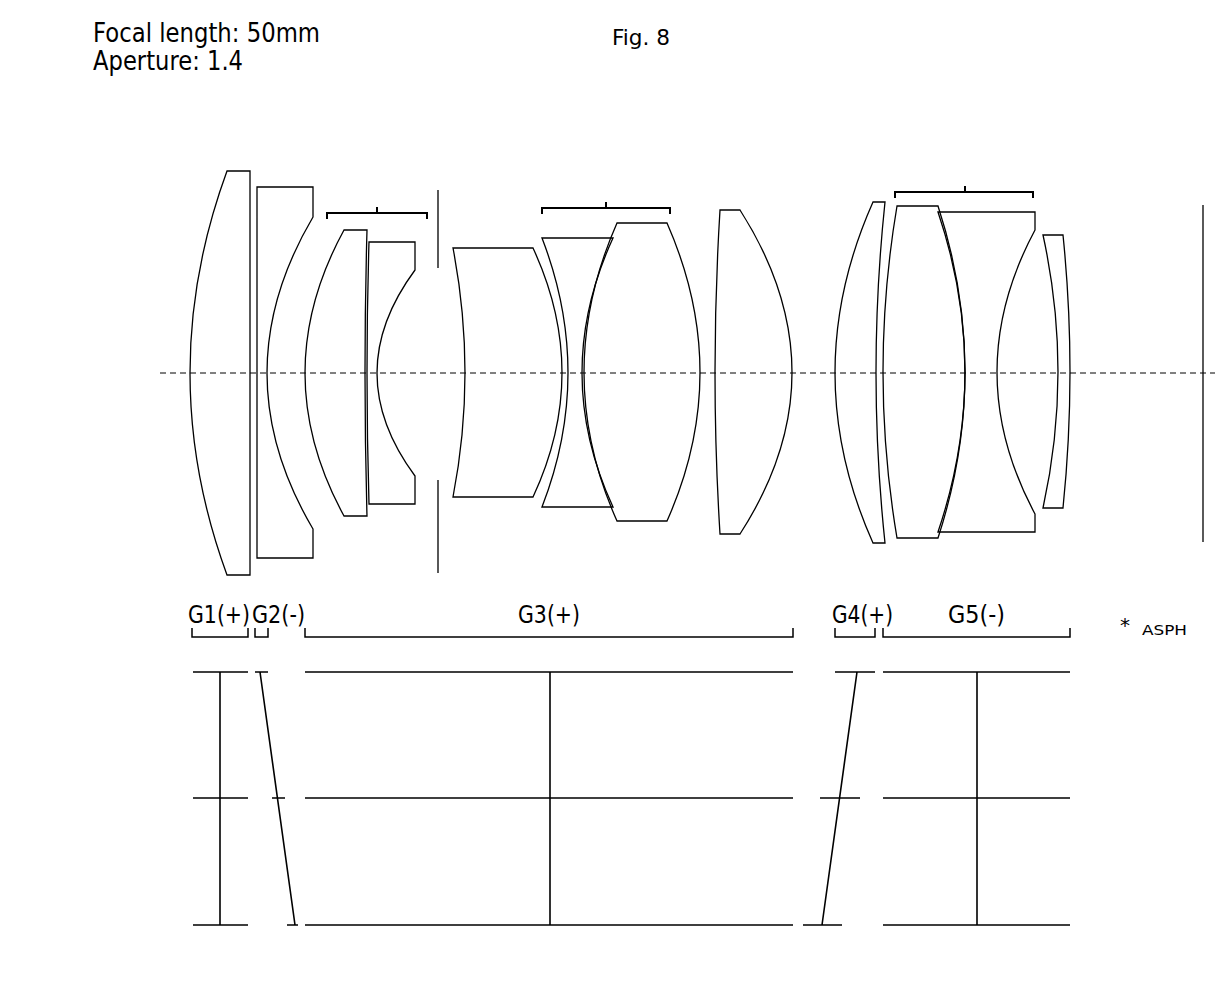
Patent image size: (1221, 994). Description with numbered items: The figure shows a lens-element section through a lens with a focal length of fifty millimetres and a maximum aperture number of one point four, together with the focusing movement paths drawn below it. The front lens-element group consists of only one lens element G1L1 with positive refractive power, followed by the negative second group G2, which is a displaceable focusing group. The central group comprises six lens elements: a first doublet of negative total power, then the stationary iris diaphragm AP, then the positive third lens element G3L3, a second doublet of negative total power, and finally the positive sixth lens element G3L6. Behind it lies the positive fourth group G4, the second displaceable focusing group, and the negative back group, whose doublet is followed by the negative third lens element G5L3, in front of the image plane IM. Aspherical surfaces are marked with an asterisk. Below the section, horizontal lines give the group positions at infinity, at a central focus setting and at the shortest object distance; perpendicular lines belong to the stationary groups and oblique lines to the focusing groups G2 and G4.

The first lens element of front lens-element group G1L1 is at (222, 384).
The second lens-element group G2 is at (284, 384).
The iris diaphragm AP is at (437, 385).
The third lens element of central group G3L3 is at (504, 384).
The sixth lens element of central group G3L6 is at (749, 384).
The fourth lens-element group G4 is at (862, 384).
The third lens element of back lens-element group G5L3 is at (1064, 385).
The image plane IM is at (1202, 394).